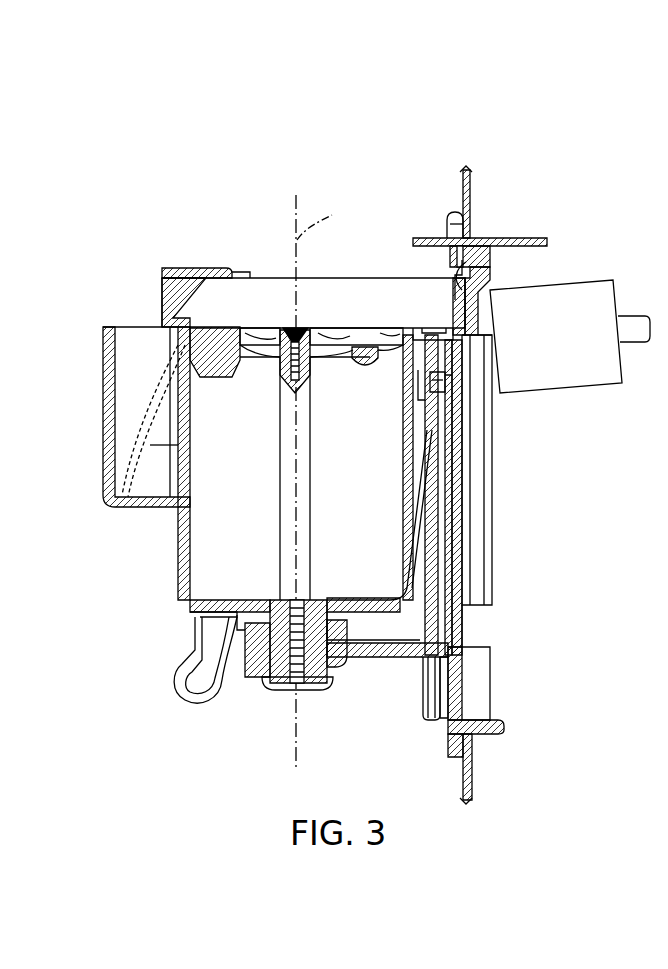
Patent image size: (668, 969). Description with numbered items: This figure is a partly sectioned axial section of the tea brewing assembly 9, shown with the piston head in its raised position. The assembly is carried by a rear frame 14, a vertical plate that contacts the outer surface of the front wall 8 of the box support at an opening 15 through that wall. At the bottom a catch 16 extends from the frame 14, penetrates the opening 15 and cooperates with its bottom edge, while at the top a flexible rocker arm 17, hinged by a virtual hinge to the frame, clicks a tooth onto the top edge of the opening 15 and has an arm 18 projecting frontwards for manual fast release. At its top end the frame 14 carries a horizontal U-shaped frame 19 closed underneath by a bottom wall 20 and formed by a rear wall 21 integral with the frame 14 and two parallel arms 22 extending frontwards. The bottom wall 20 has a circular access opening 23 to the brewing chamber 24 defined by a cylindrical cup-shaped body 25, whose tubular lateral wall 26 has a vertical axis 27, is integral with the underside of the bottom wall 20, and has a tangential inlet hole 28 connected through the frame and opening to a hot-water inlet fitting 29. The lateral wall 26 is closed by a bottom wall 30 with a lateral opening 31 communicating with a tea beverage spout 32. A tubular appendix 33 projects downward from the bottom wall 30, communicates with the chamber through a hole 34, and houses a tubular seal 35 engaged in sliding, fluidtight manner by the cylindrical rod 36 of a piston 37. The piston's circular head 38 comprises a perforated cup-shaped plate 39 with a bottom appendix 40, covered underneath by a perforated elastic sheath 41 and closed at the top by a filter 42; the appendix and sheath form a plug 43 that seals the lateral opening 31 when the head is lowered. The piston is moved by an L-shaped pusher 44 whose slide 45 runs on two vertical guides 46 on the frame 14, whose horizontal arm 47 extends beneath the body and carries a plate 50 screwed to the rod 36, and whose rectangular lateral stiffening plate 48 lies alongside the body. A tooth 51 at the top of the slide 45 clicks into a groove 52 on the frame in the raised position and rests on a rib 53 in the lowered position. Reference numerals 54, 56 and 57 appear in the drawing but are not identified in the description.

The front wall 8 is at (470, 202).
The brewing assembly 9 is at (357, 204).
The rear frame 14 is at (455, 673).
The opening 15 is at (498, 270).
The catch 16 is at (486, 738).
The flexible rocker arm 17 is at (530, 240).
The arm 18 is at (446, 242).
The horizontal U-shaped frame 19 is at (256, 275).
The bottom wall 20 is at (430, 338).
The rear wall 21 is at (453, 300).
The parallel arms 22 is at (210, 290).
The circular access opening 23 is at (196, 326).
The brewing chamber 24 is at (237, 455).
The cylindrical cup-shaped body 25 is at (176, 550).
The cylindrical tubular lateral wall 26 is at (180, 565).
The vertical axis 27 is at (324, 216).
The tangential inlet hole 28 is at (361, 352).
The hot-water inlet fitting 29 is at (576, 372).
The bottom wall 30 is at (351, 606).
The lateral opening 31 is at (202, 614).
The tea beverage spout 32 is at (226, 666).
The tubular appendix 33 is at (265, 667).
The hole 34 is at (298, 604).
The tubular seal 35 is at (332, 656).
The cylindrical rod 36 is at (303, 452).
The piston 37 is at (280, 463).
The circular head 38 is at (262, 372).
The perforated cup-shaped plate 39 is at (335, 358).
The bottom appendix 40 is at (205, 345).
The perforated elastic sheath 41 is at (205, 358).
The filter 42 is at (302, 330).
The plug 43 is at (212, 402).
The pusher 44 is at (417, 680).
The slide 45 is at (432, 540).
The vertical guides 46 is at (444, 694).
The horizontal arm 47 is at (408, 656).
The lateral stiffening plate 48 is at (396, 641).
The plate 50 is at (310, 672).
The tooth 51 is at (430, 388).
The groove 52 is at (460, 385).
The rib 53 is at (465, 636).
The lid flange 54 is at (160, 268).
The side pocket 56 is at (131, 335).
The pocket wall 57 is at (165, 300).